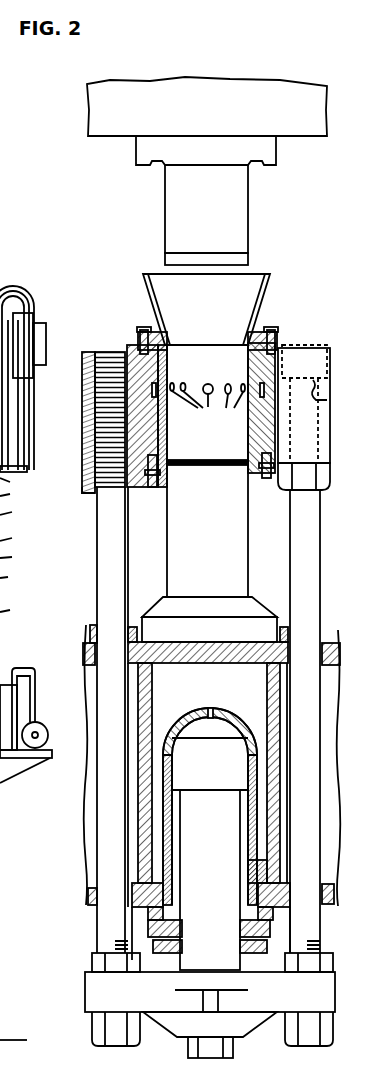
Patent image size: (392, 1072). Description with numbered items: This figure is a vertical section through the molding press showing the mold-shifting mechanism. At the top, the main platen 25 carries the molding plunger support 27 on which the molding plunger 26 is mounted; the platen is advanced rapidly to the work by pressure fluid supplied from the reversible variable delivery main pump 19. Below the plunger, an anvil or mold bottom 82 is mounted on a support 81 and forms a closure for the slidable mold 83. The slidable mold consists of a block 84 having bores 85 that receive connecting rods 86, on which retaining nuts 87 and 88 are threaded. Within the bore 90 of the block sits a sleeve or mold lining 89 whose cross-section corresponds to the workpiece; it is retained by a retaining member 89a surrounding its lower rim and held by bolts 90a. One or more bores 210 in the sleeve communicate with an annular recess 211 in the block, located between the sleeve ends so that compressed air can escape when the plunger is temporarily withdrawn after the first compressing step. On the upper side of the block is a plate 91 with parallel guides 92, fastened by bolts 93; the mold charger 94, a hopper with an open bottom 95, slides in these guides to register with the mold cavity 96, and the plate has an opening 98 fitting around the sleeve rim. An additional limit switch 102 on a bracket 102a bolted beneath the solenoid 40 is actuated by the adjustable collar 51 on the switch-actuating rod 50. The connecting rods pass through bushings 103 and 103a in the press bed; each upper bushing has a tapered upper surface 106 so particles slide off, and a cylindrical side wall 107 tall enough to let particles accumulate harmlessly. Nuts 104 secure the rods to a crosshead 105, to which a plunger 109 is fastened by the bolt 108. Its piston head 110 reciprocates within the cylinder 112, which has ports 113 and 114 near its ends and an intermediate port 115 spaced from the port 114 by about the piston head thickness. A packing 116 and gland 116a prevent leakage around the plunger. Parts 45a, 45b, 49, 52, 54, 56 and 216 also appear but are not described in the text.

The reversible variable delivery main pump 19 is at (6, 288).
The main platen 25 is at (205, 124).
The molding plunger 26 is at (237, 207).
The molding plunger support 27 is at (274, 154).
The solenoid 40 is at (17, 513).
The part 45a is at (18, 480).
The part 45b is at (16, 913).
The part 49 is at (14, 611).
The switch-actuating rod 50 is at (15, 579).
The adjustable collar 51 is at (17, 495).
The part 52 is at (12, 909).
The part 54 is at (12, 913).
The part 56 is at (12, 946).
The support 81 is at (213, 607).
The anvil or mold bottom 82 is at (228, 539).
The slidable mold 83 is at (83, 380).
The block 84 is at (88, 403).
The bores 85 is at (100, 420).
The connecting rods 86 is at (100, 433).
The retaining nut 87 is at (90, 484).
The retaining nut 88 is at (92, 354).
The sleeve or mold lining 89 is at (168, 380).
The retaining member 89a is at (167, 476).
The bore 90 is at (160, 422).
The bolts 90a is at (150, 478).
The plate 91 is at (137, 340).
The parallel guides 92 is at (140, 331).
The bolts 93 is at (146, 328).
The mold charger 94 is at (268, 293).
The open bottom 95 is at (190, 323).
The mold cavity 96 is at (168, 352).
The opening 98 is at (250, 350).
The additional limit switch 102 is at (23, 558).
The bracket 102a is at (27, 538).
The bushings 103 is at (90, 640).
The bushings 103a is at (88, 896).
The nuts 104 is at (92, 963).
The crosshead 105 is at (88, 989).
The upper surface 106 is at (134, 628).
The cylindrical side wall 107 is at (143, 632).
The bolt 108 is at (235, 1052).
The plunger 109 is at (200, 855).
The piston head 110 is at (200, 779).
The cylinder 112 is at (183, 713).
The port 113 is at (212, 710).
The port 114 is at (262, 915).
The intermediate port 115 is at (270, 867).
The packing 116 is at (183, 930).
The gland 116a is at (183, 947).
The bores 210 is at (207, 406).
The annular recess 211 is at (250, 402).
The bracket 216 is at (29, 843).